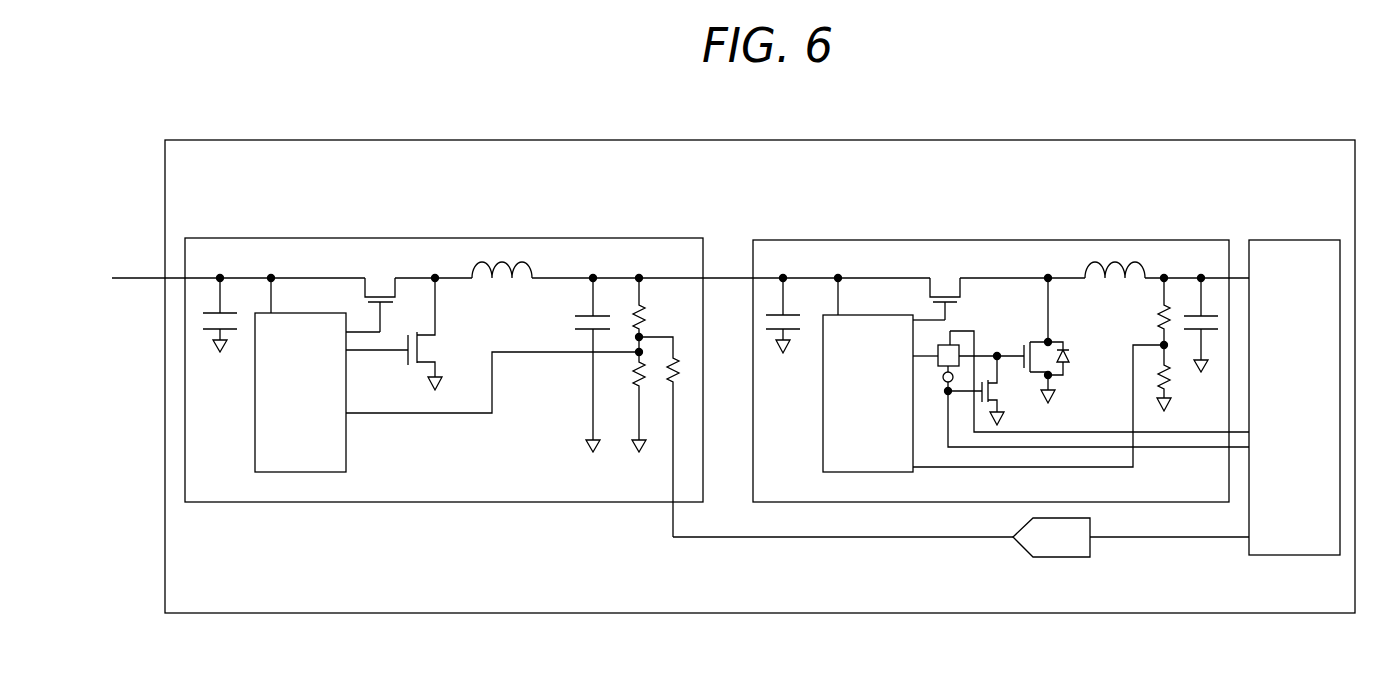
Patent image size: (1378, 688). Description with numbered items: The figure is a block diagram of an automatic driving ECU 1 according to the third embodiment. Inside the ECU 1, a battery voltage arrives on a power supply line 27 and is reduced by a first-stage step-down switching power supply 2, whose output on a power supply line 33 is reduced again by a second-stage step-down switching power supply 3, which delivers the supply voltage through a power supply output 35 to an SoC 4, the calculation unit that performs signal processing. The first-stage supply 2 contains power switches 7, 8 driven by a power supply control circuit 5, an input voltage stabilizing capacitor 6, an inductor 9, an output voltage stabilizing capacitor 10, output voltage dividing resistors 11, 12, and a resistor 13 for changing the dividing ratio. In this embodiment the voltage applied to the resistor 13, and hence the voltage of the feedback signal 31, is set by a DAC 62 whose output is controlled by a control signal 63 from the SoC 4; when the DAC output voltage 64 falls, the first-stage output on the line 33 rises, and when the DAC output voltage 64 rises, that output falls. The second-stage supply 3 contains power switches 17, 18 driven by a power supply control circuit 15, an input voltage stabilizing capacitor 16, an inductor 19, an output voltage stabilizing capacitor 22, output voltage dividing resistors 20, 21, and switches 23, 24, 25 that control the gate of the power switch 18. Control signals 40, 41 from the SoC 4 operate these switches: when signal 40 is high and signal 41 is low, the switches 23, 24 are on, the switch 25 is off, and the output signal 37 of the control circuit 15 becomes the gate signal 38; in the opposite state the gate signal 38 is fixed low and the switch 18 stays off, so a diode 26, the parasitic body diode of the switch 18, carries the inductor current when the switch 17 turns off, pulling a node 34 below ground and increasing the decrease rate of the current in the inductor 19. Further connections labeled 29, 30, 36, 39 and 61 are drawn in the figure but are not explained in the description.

The automatic driving ECU 1 is at (948, 140).
The first-stage step-down switching power supply 2 is at (540, 238).
The second-stage step-down switching power supply 3 is at (1105, 240).
The SoC 4 is at (1295, 240).
The power supply control circuit 5 is at (300, 313).
The input voltage stabilizing capacitor 6 is at (237, 318).
The power switch 7 is at (375, 290).
The power switch 8 is at (440, 355).
The inductor 9 is at (533, 268).
The output voltage stabilizing capacitor 10 is at (574, 314).
The output voltage dividing resistor 11 is at (645, 312).
The output voltage dividing resistor 12 is at (636, 380).
The resistor for changing an output voltage dividing resistance ratio 13 is at (676, 365).
The power supply control circuit 15 is at (865, 315).
The input voltage stabilizing capacitor 16 is at (800, 318).
The power switch 17 is at (945, 288).
The power switch 18 is at (1043, 338).
The inductor 19 is at (1148, 268).
The output voltage dividing resistor 20 is at (1153, 315).
The output voltage dividing resistor 21 is at (1167, 388).
The output voltage stabilizing capacitor 22 is at (1205, 333).
The switch 23 is at (958, 340).
The switch 24 is at (945, 398).
The switch 25 is at (1003, 393).
The diode 26 is at (1068, 355).
The power supply line 27 is at (133, 278).
The gate signal line 29 is at (370, 334).
The gate signal line 30 is at (398, 352).
The feedback signal 31 is at (420, 415).
The power supply line 33 is at (727, 278).
The node 34 is at (1017, 278).
The power supply output 35 is at (1238, 278).
The gate signal line 36 is at (918, 318).
The output signal 37 is at (928, 358).
The gate signal 38 is at (998, 352).
The feedback line 39 is at (965, 468).
The control signal 40 is at (1153, 435).
The control signal 41 is at (1188, 450).
The power line 61 is at (450, 278).
The DAC 62 is at (1060, 558).
The control signal 63 is at (1178, 540).
The DAC output voltage 64 is at (945, 540).